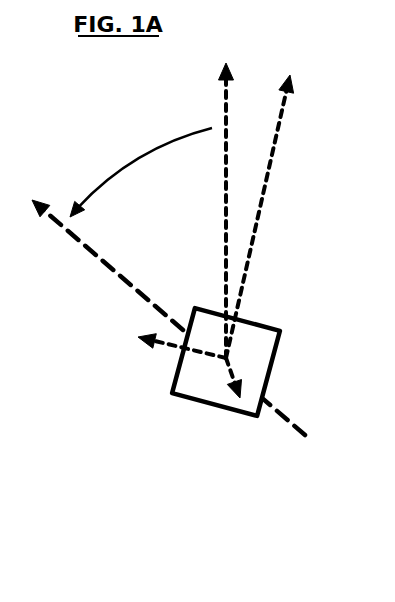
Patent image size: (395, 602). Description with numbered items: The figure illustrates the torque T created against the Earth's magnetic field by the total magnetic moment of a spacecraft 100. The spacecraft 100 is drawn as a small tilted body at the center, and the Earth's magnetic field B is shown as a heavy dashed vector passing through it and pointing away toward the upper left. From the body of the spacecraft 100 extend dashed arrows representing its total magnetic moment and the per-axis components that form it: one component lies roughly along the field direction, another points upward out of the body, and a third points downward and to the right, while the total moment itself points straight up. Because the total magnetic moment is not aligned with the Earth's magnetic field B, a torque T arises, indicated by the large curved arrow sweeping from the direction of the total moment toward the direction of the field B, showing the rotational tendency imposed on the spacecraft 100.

The spacecraft 100 is at (270, 327).
The Earth's magnetic field B is at (71, 231).
The torque T is at (137, 150).